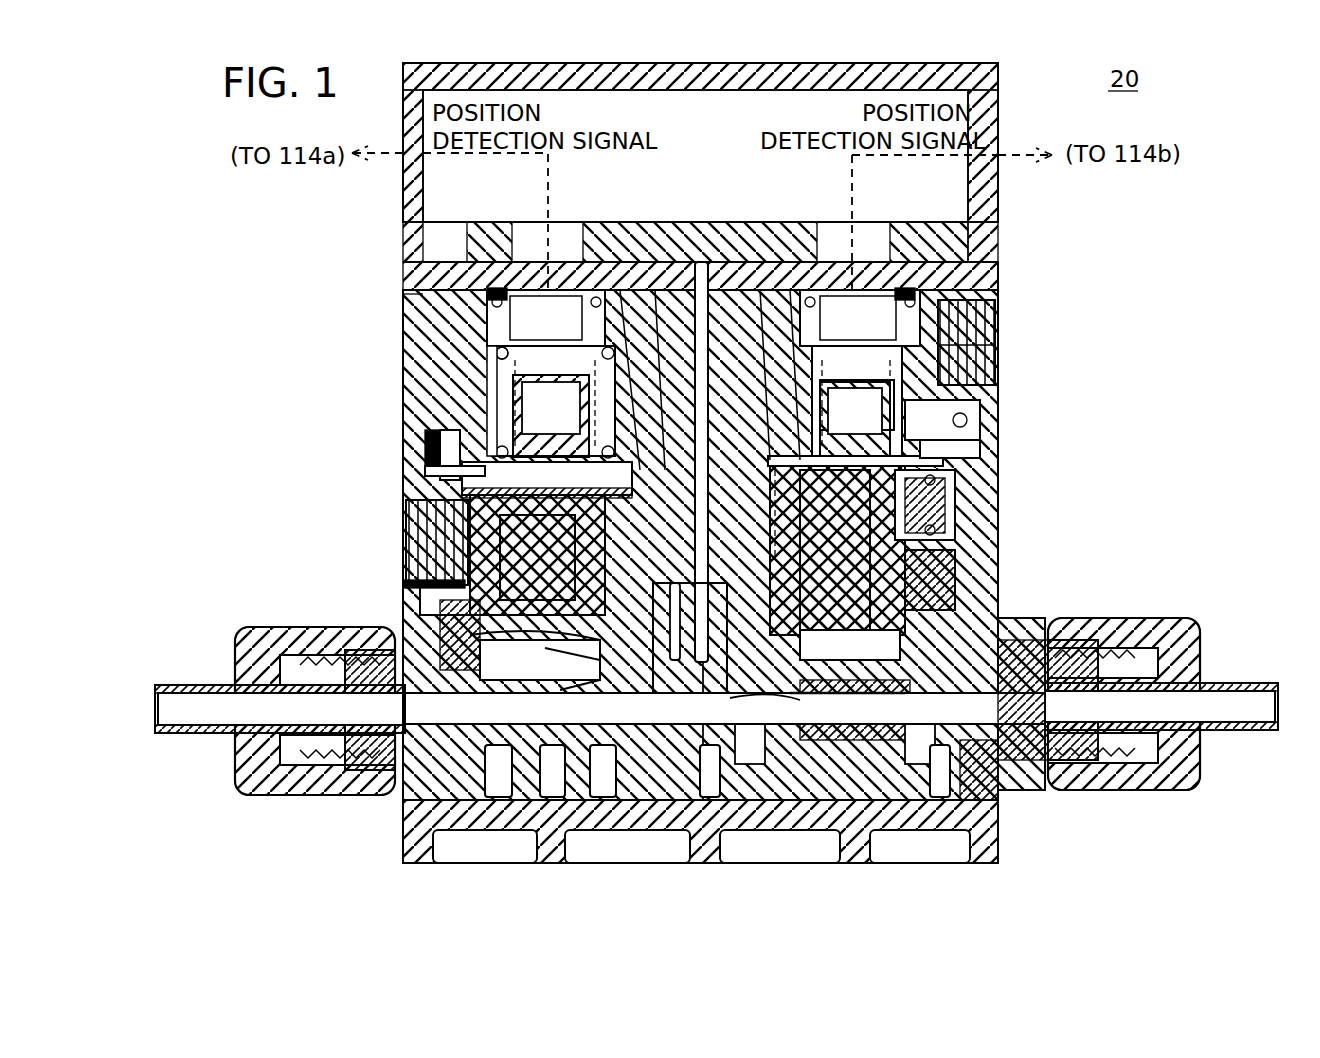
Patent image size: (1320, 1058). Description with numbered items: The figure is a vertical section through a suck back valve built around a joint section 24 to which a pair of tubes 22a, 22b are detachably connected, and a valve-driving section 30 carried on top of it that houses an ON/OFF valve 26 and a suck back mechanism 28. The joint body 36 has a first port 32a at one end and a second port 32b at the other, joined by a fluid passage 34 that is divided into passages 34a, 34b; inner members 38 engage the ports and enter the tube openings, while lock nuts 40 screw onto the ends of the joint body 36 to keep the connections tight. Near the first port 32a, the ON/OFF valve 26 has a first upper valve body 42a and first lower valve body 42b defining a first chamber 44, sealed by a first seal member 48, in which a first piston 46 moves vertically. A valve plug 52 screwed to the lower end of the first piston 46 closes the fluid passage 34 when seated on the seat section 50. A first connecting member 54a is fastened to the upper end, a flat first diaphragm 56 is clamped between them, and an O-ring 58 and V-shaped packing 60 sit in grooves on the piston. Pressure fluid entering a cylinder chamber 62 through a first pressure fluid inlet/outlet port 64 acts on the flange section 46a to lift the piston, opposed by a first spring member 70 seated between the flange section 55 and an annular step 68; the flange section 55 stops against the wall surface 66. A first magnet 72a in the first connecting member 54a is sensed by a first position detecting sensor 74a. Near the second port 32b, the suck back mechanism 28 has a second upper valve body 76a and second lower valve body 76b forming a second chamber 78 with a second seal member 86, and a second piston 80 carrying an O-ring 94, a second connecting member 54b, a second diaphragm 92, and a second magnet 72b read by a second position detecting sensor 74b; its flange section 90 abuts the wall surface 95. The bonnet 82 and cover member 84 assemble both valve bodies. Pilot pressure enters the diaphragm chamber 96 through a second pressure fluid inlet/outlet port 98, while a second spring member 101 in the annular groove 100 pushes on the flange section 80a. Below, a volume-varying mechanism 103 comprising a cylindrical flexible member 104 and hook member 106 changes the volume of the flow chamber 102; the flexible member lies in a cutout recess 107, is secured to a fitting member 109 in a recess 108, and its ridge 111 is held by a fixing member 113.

The tube 22a is at (200, 684).
The tube 22b is at (1245, 682).
The joint section 24 is at (430, 805).
The ON/OFF valve 26 is at (445, 398).
The suck back mechanism 28 is at (978, 492).
The valve-driving section 30 is at (1000, 293).
The first port 32a is at (370, 770).
The second port 32b is at (1070, 760).
The fluid passage 34 is at (640, 725).
The divided fluid passage 34a is at (700, 740).
The divided fluid passage 34b is at (940, 760).
The joint body 36 is at (672, 790).
The inner member 38 is at (320, 760).
The lock nut 40 is at (1160, 775).
The first upper valve body 42a is at (403, 294).
The first lower valve body 42b is at (465, 588).
The first chamber 44 is at (485, 372).
The first piston 46 is at (470, 540).
The flange section 46a is at (662, 450).
The first seal member 48 is at (425, 440).
The seat section 50 is at (505, 650).
The valve plug 52 is at (560, 660).
The first connecting member 54a is at (551, 445).
The second connecting member 54b is at (905, 412).
The flange section 55 is at (640, 340).
The first diaphragm 56 is at (462, 470).
The O-ring 58 is at (455, 616).
The packing 60 is at (430, 520).
The cylinder chamber 62 is at (462, 492).
The first pressure fluid inlet/outlet port 64 is at (445, 562).
The wall surface 66 is at (440, 449).
The annular step 68 is at (495, 350).
The first spring member 70 is at (578, 338).
The first magnet 72a is at (555, 384).
The second magnet 72b is at (840, 372).
The first position detecting sensor 74a is at (478, 303).
The second position detecting sensor 74b is at (920, 298).
The second upper valve body 76a is at (955, 282).
The second lower valve body 76b is at (920, 512).
The second chamber 78 is at (945, 528).
The second piston 80 is at (905, 545).
The flange section 80a is at (790, 460).
The bonnet 82 is at (965, 250).
The cover member 84 is at (990, 88).
The second seal member 86 is at (945, 420).
The flange section 90 is at (820, 480).
The second diaphragm 92 is at (772, 540).
The O-ring 94 is at (950, 560).
The wall surface 95 is at (950, 440).
The diaphragm chamber 96 is at (965, 362).
The second pressure fluid inlet/outlet port 98 is at (960, 318).
The annular groove 100 is at (708, 640).
The second spring member 101 is at (930, 467).
The flow chamber 102 is at (858, 740).
The volume-varying mechanism 103 is at (905, 640).
The cylindrical flexible member 104 is at (780, 740).
The hook member 106 is at (900, 620).
The cutout recess 107 is at (748, 770).
The recess 108 is at (980, 770).
The fitting member 109 is at (1020, 770).
The ridge 111 is at (808, 724).
The fixing member 113 is at (890, 745).